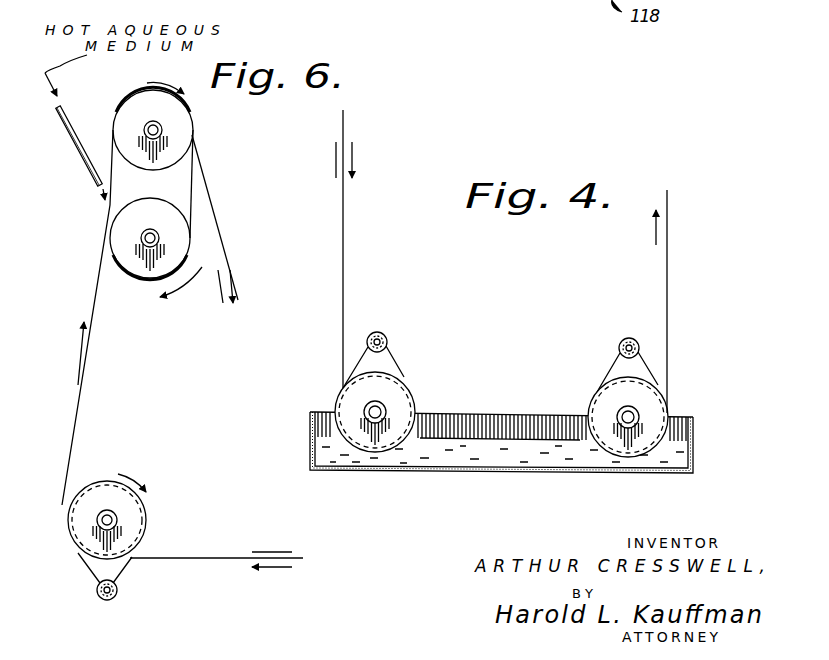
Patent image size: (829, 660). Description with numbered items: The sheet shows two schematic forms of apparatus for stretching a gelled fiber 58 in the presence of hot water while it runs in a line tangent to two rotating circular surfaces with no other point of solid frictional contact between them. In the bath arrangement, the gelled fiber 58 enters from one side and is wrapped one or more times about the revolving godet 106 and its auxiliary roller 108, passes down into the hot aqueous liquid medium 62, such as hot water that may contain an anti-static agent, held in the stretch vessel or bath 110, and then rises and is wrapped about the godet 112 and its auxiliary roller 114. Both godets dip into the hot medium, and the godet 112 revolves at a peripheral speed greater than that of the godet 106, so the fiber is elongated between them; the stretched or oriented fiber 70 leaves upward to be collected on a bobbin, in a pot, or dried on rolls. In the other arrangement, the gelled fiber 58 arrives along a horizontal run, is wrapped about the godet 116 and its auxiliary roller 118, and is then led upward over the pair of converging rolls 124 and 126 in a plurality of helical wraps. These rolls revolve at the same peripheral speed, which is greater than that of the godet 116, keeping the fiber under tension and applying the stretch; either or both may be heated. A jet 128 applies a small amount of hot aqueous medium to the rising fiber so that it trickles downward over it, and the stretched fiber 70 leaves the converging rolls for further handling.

In FIG. 6, the gelled fiber 58 is at (187, 558).
In FIG. 4, the gelled fiber 58 is at (343, 226).
In FIG. 4, the hot aqueous liquid medium 62 is at (513, 437).
In FIG. 6, the stretched or oriented fiber 70 is at (218, 232).
In FIG. 4, the stretched or oriented fiber 70 is at (667, 262).
In FIG. 4, the godet 106 is at (410, 387).
In FIG. 4, the auxiliary roller 108 is at (384, 334).
In FIG. 4, the stretch vessel or bath 110 is at (410, 472).
In FIG. 4, the godet 112 is at (655, 410).
In FIG. 4, the auxiliary roller 114 is at (622, 338).
In FIG. 6, the godet 116 is at (147, 516).
In FIG. 6, the auxiliary roller 118 is at (115, 597).
In FIG. 6, the converging roll 124 is at (185, 127).
In FIG. 6, the converging roll 126 is at (141, 277).
In FIG. 6, the jet 128 is at (82, 157).